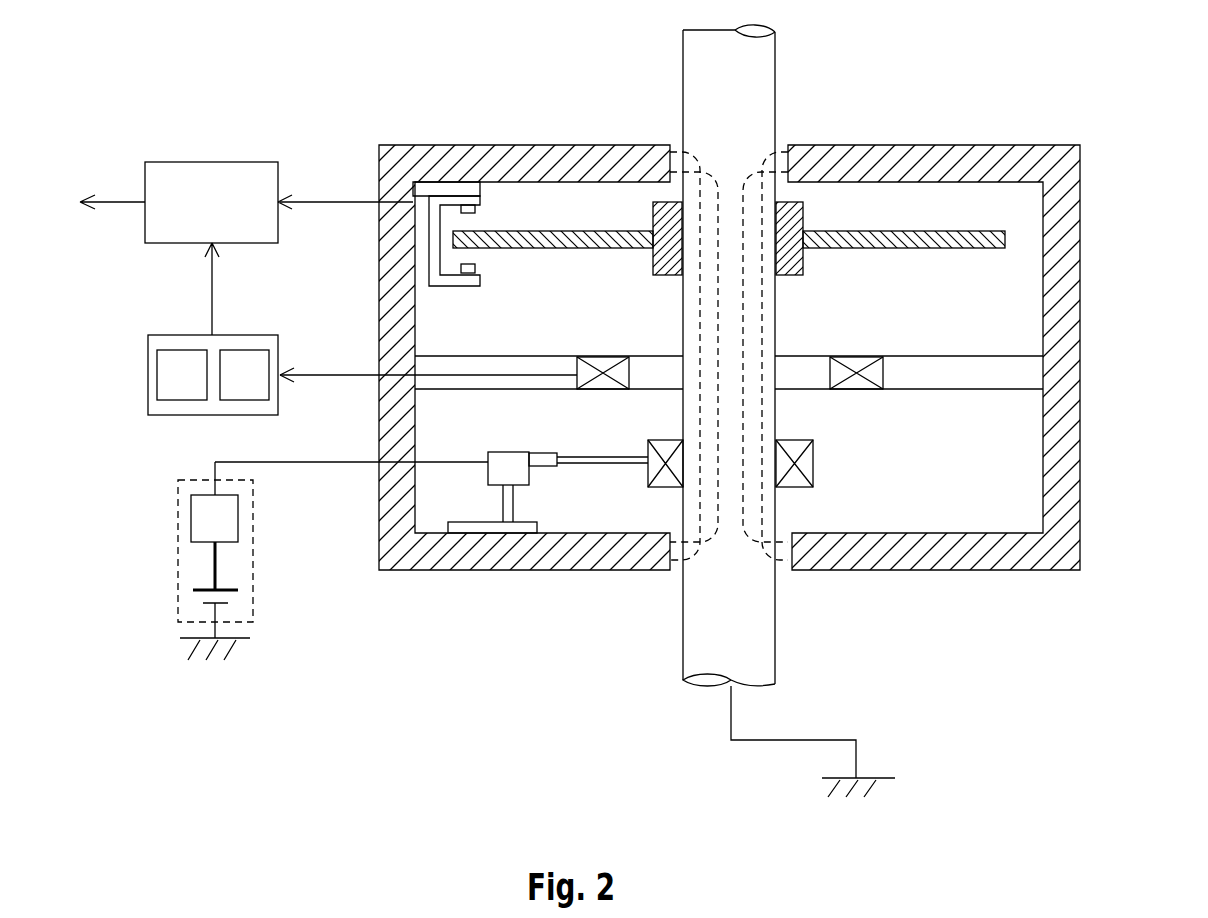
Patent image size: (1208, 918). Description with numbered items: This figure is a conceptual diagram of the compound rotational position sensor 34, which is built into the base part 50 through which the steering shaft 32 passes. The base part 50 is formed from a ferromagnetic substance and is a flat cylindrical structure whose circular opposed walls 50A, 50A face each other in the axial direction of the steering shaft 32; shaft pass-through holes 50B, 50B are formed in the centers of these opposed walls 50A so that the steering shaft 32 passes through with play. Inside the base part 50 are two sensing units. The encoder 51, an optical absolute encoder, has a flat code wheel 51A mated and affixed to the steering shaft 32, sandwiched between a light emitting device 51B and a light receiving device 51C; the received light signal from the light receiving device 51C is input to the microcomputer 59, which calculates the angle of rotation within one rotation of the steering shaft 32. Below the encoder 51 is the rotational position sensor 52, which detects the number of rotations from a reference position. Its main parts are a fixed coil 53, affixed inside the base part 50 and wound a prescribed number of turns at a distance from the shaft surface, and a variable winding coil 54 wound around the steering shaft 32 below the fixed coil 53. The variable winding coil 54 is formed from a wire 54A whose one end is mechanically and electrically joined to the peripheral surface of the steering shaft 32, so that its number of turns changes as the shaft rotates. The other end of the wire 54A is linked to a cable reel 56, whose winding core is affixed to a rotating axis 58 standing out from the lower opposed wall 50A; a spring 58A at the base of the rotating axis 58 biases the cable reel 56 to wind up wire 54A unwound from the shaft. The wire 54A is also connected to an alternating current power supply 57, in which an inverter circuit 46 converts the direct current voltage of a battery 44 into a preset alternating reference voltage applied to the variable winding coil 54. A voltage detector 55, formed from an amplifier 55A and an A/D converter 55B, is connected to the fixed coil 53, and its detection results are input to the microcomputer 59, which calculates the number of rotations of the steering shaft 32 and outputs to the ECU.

The steering shaft 32 is at (760, 70).
The compound rotational position sensor 34 is at (492, 81).
The battery 44 is at (183, 595).
The inverter circuit 46 is at (197, 516).
The base part 50 is at (788, 359).
The opposed walls 50A is at (938, 150).
The shaft pass-through holes 50B is at (781, 150).
The encoder 51 is at (670, 183).
The code wheel 51A is at (918, 250).
The light emitting device 51B is at (478, 268).
The light receiving device 51C is at (465, 210).
The rotational position sensor 52 is at (715, 456).
The fixed coil 53 is at (858, 390).
The variable winding coil 54 is at (813, 462).
The wire 54A is at (583, 465).
The voltage detector 55 is at (215, 378).
The amplifier 55A is at (262, 357).
The A/D converter 55B is at (157, 355).
The cable reel 56 is at (484, 514).
The alternating current power supply 57 is at (222, 561).
The rotating axis 58 is at (535, 500).
The spring 58A is at (515, 505).
The microcomputer 59 is at (262, 245).